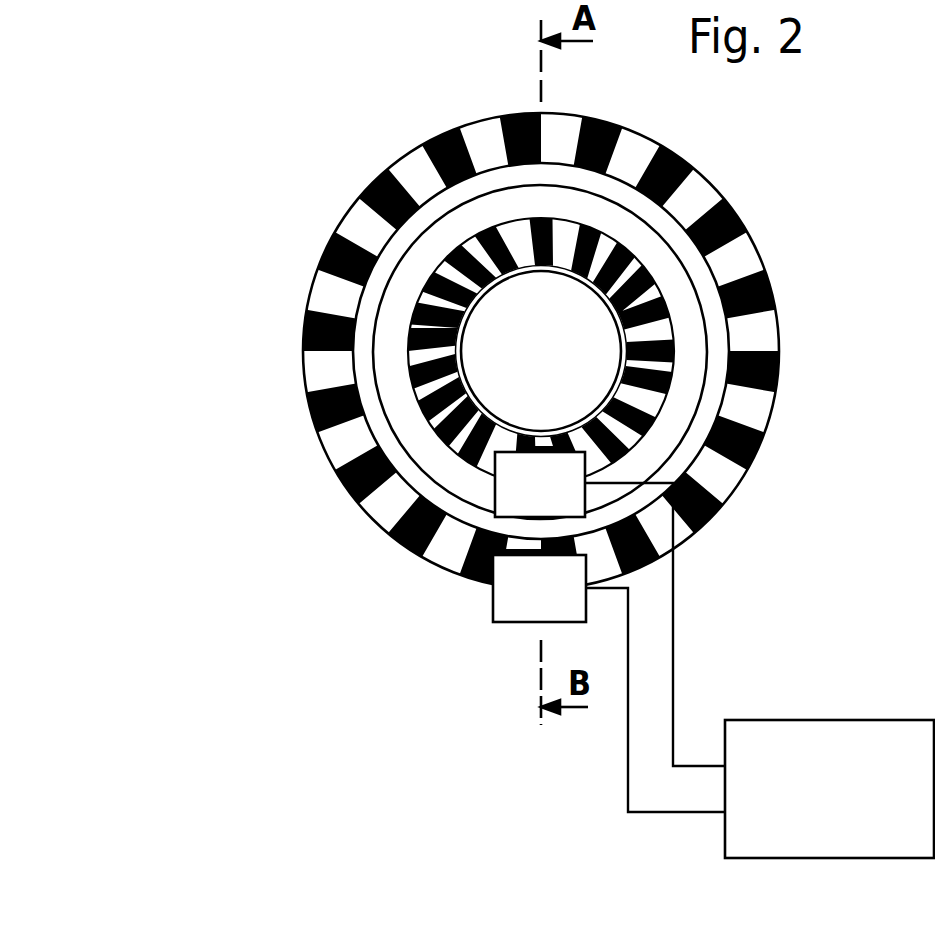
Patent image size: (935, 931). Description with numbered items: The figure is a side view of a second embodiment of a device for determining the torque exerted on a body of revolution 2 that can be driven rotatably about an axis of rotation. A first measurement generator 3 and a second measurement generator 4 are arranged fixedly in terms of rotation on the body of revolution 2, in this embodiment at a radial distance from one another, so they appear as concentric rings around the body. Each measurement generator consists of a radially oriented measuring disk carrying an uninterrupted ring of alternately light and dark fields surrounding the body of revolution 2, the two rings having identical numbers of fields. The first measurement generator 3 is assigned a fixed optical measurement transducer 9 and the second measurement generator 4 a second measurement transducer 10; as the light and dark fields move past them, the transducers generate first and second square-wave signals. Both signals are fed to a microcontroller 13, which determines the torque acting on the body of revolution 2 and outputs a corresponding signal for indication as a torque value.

The body of revolution 2 is at (495, 334).
The first measurement generator 3 is at (429, 269).
The second measurement generator 4 is at (404, 150).
The optical measurement transducer 9 is at (531, 501).
The second measurement transducer 10 is at (527, 604).
The microcontroller 13 is at (833, 732).